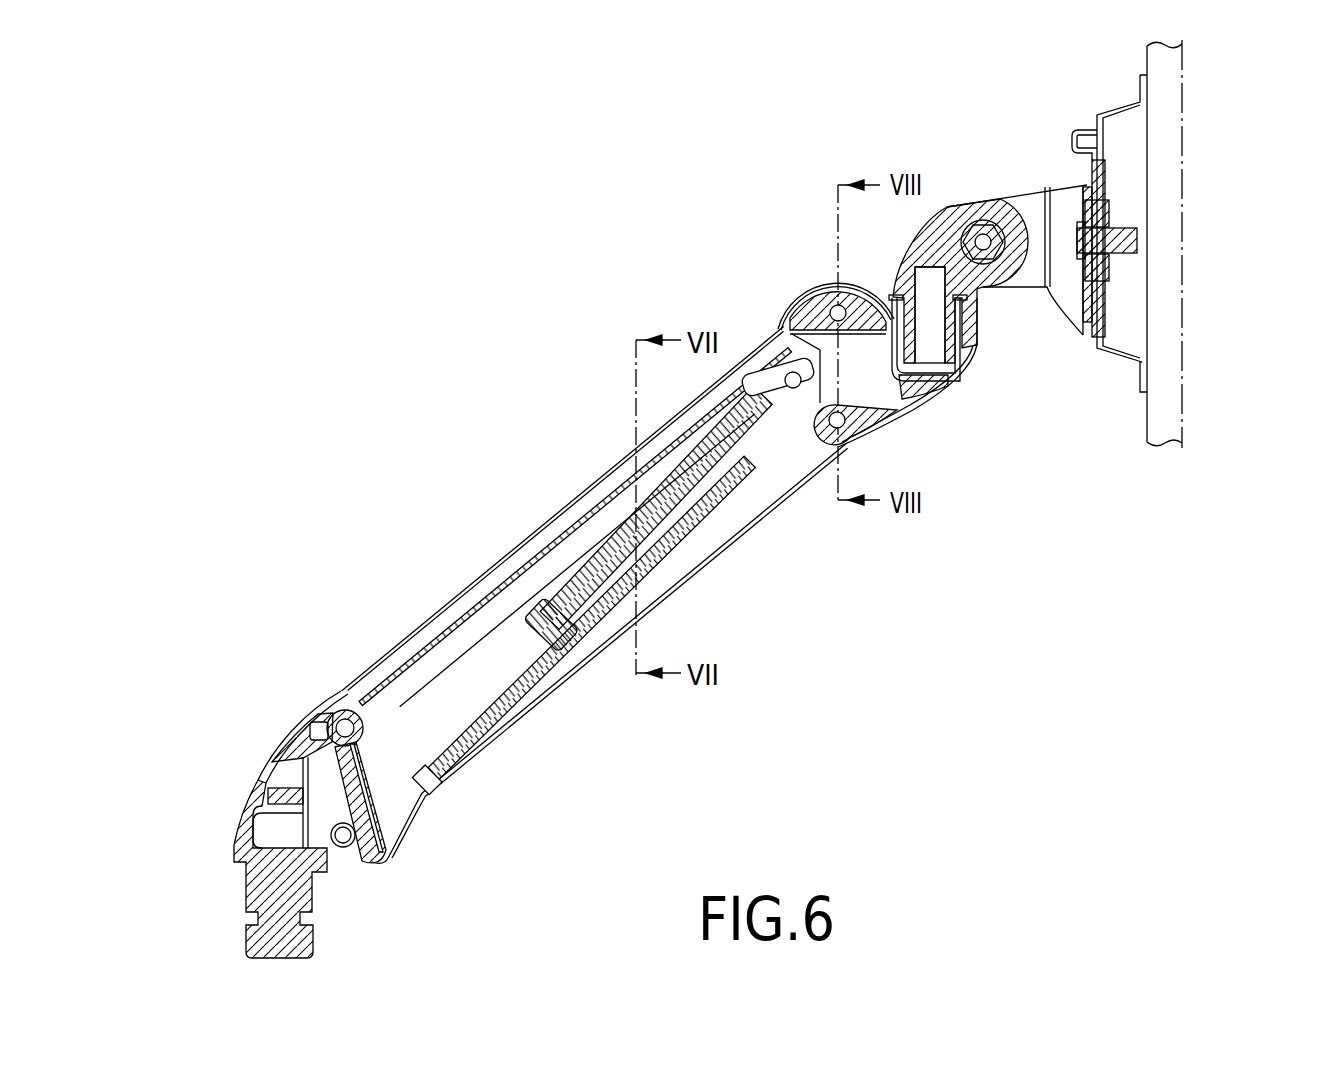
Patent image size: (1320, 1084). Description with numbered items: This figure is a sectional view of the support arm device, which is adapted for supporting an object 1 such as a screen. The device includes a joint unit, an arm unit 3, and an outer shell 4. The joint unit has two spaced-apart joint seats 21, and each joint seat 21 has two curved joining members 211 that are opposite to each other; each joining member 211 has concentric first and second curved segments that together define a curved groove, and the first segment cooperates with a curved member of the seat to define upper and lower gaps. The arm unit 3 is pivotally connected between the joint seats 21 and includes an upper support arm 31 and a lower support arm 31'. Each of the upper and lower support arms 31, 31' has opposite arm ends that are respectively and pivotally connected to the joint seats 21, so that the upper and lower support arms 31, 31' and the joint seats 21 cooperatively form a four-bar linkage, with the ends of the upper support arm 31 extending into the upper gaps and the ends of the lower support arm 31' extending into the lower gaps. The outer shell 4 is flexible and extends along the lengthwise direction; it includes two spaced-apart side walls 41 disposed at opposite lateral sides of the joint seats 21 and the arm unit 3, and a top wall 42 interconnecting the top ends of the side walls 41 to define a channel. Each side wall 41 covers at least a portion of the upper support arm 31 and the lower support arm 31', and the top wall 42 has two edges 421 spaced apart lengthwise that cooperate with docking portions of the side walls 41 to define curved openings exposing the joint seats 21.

The object 1 is at (1205, 151).
The joint seat 21 is at (960, 385).
The curved joining member 211 is at (869, 300).
The arm unit 3 is at (585, 508).
The upper support arm 31 is at (541, 623).
The lower support arm 31' is at (656, 589).
The outer shell 4 is at (402, 628).
The side wall 41 is at (518, 560).
The top wall 42 is at (447, 602).
The edge 421 is at (795, 308).